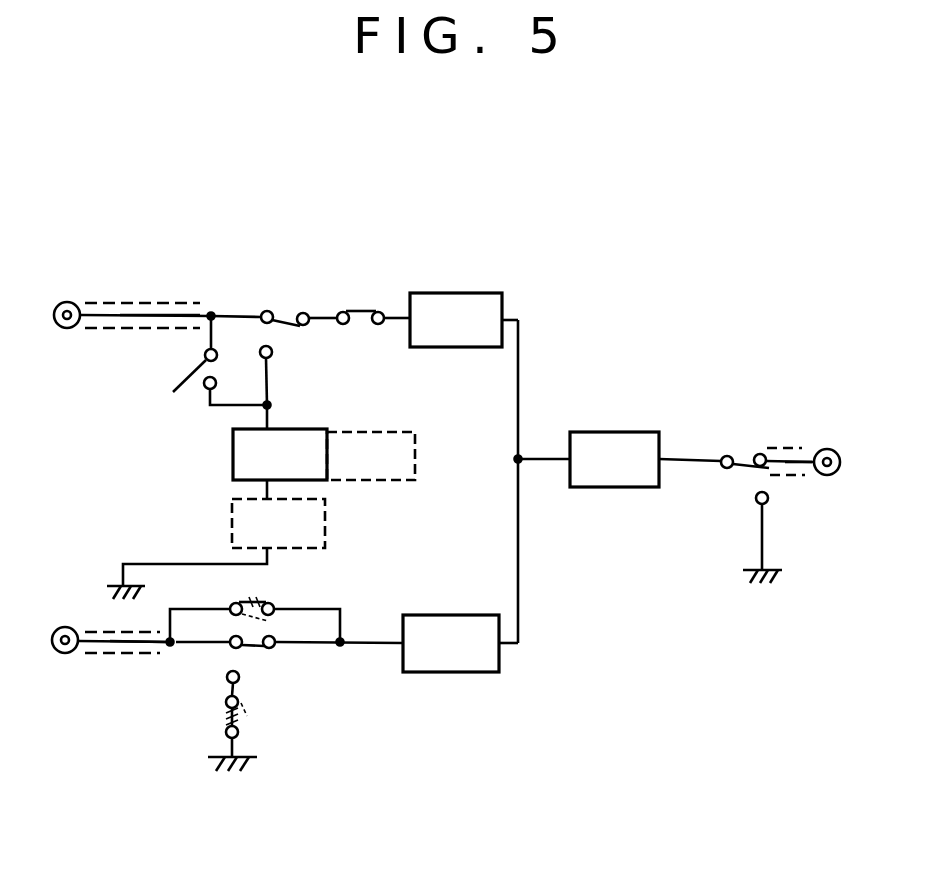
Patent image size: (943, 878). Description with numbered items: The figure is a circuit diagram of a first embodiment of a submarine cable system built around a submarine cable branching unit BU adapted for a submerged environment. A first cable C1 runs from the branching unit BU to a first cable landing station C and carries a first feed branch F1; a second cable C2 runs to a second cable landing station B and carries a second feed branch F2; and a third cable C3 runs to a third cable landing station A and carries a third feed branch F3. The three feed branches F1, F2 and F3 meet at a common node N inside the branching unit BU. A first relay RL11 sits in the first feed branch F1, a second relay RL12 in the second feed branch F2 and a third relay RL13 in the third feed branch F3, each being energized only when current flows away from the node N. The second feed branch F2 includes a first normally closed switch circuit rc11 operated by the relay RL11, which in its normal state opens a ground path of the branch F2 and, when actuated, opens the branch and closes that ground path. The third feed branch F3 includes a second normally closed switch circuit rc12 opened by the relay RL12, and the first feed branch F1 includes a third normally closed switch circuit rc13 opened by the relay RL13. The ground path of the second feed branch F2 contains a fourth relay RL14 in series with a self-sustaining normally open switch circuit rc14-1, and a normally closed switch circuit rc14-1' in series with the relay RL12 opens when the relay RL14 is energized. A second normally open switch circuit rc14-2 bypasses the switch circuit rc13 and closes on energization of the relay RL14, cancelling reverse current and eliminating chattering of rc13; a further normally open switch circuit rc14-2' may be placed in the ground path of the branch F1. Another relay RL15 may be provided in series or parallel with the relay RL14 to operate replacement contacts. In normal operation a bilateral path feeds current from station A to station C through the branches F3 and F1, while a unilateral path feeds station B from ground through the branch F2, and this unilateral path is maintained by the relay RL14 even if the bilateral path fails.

The submarine cable branching unit BU is at (457, 207).
The second cable landing station B is at (119, 316).
The first cable landing station C is at (98, 640).
The third cable landing station A is at (839, 465).
The first cable C1 is at (103, 662).
The second cable C2 is at (115, 297).
The third cable C3 is at (797, 441).
The first feed branch F1 is at (150, 648).
The second feed branch F2 is at (183, 312).
The third feed branch F3 is at (797, 468).
The first normally open switch circuit rc14-1 is at (176, 361).
The normally closed switch circuit rc14-1' is at (367, 289).
The first normally closed switch circuit rc11 is at (290, 341).
The second normally closed switch circuit rc12 is at (727, 518).
The third normally closed switch circuit rc13 is at (259, 656).
The second normally open switch circuit rc14-2 is at (324, 608).
The normally open switch circuit rc14-2' is at (381, 727).
The first relay RL11 is at (460, 643).
The second relay RL12 is at (464, 320).
The third relay RL13 is at (645, 459).
The fourth relay RL14 is at (280, 452).
The another relay RL15 is at (261, 515).
The common node N is at (518, 459).